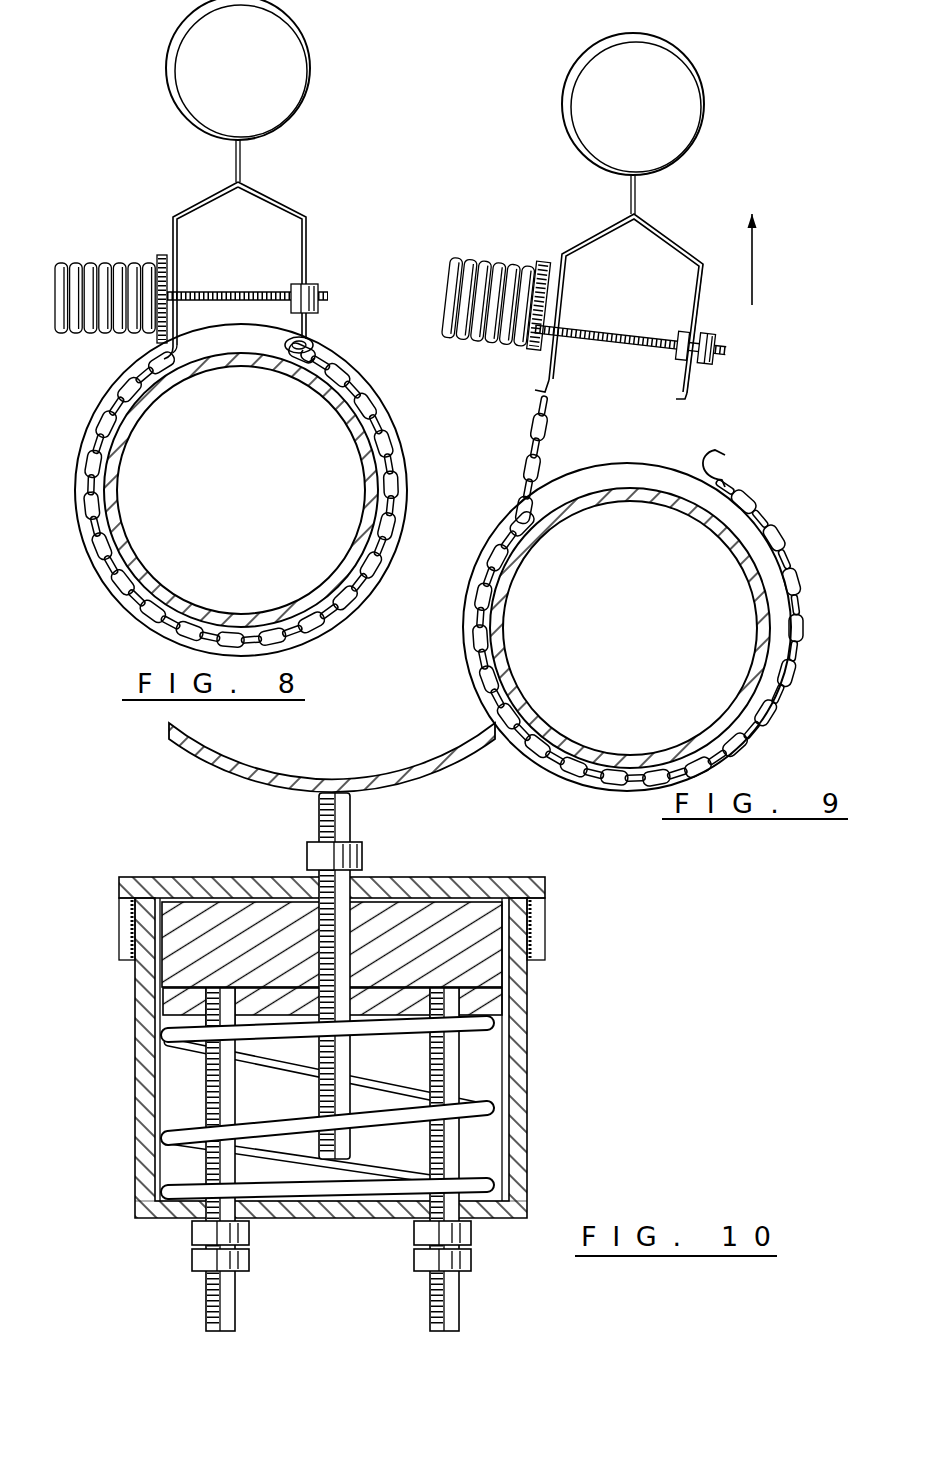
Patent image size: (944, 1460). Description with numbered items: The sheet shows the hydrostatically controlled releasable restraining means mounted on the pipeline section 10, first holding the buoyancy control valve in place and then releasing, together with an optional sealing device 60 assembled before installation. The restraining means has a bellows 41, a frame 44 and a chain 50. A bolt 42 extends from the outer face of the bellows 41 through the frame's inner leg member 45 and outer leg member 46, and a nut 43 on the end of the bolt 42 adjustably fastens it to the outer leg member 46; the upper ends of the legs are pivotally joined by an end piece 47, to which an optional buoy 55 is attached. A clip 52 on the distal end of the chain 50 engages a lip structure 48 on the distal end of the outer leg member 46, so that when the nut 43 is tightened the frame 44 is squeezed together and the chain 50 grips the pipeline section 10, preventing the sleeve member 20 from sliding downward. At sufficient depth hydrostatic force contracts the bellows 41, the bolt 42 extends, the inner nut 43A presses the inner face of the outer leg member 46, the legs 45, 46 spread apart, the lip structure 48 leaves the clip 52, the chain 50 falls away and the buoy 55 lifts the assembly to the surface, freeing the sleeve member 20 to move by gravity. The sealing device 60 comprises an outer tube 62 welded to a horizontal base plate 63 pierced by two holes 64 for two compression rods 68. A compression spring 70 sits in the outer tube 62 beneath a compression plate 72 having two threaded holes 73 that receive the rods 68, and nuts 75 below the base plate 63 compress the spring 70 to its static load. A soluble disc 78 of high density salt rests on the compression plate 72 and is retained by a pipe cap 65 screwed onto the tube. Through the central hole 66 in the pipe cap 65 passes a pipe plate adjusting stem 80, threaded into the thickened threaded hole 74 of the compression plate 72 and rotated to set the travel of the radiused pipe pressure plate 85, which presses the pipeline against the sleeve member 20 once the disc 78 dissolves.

In FIG. 8, the pipeline section 10 is at (166, 588).
In FIG. 9, the pipeline section 10 is at (508, 665).
In FIG. 8, the sleeve member 20 is at (90, 570).
In FIG. 8, the bellows 41 is at (84, 280).
In FIG. 9, the bellows 41 is at (484, 358).
In FIG. 8, the bolt 42 is at (187, 294).
In FIG. 9, the bolt 42 is at (617, 350).
In FIG. 8, the nut 43 is at (322, 292).
In FIG. 9, the nut 43 is at (717, 367).
In FIG. 9, the inner nut 43A is at (686, 339).
In FIG. 8, the frame 44 is at (257, 250).
In FIG. 9, the frame 44 is at (657, 308).
In FIG. 8, the inner leg member 45 is at (177, 246).
In FIG. 8, the outer leg member 46 is at (313, 247).
In FIG. 9, the outer leg member 46 is at (708, 288).
In FIG. 8, the end piece 47 is at (206, 200).
In FIG. 8, the lip structure 48 is at (314, 350).
In FIG. 9, the lip structure 48 is at (677, 401).
In FIG. 8, the chain 50 is at (376, 377).
In FIG. 9, the chain 50 is at (527, 463).
In FIG. 8, the clip 52 is at (294, 353).
In FIG. 9, the clip 52 is at (731, 456).
In FIG. 8, the buoy 55 is at (222, 88).
In FIG. 9, the buoy 55 is at (617, 123).
In FIG. 10, the sealing device 60 is at (160, 840).
In FIG. 10, the outer tube 62 is at (531, 1101).
In FIG. 10, the base plate 63 is at (160, 1213).
In FIG. 10, the holes 64 is at (338, 1117).
In FIG. 10, the pipe cap 65 is at (537, 890).
In FIG. 10, the central hole 66 is at (372, 870).
In FIG. 10, the compression rods 68 is at (430, 1314).
In FIG. 10, the compression spring 70 is at (338, 1062).
In FIG. 10, the compression plate 72 is at (488, 1005).
In FIG. 10, the threaded holes 73 is at (213, 981).
In FIG. 10, the threaded hole 74 is at (363, 982).
In FIG. 10, the nuts 75 is at (474, 1238).
In FIG. 10, the soluble disc 78 is at (255, 910).
In FIG. 10, the pipe plate adjusting stem 80 is at (326, 1094).
In FIG. 10, the pipe pressure plate 85 is at (388, 773).